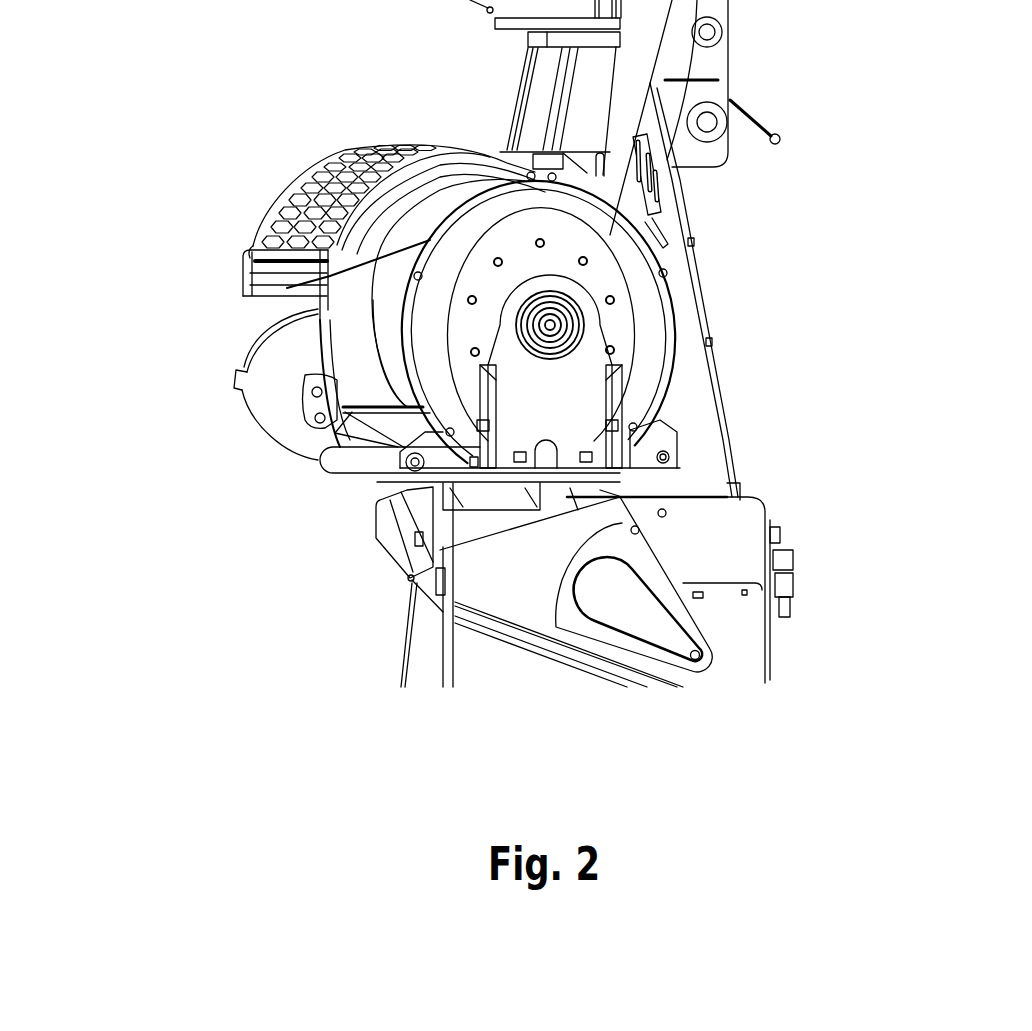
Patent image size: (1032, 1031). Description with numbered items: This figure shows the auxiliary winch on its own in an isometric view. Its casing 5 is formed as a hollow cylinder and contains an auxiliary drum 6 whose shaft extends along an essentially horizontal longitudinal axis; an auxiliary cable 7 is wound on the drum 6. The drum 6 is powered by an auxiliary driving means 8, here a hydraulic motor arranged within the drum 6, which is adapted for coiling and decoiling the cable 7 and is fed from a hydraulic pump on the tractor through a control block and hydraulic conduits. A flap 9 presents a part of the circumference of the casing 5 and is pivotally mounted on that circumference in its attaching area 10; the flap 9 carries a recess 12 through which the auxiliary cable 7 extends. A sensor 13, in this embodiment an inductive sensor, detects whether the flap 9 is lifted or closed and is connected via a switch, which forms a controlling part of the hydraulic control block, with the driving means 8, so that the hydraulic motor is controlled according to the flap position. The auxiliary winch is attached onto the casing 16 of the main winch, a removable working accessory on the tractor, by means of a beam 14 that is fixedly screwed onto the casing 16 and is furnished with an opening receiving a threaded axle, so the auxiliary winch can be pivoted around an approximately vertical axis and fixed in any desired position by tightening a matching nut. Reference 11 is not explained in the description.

The casing 5 is at (320, 316).
The auxiliary drum 6 is at (393, 358).
The auxiliary cable 7 is at (253, 242).
The auxiliary driving means 8 is at (553, 325).
The flap 9 is at (307, 178).
The attaching area 10 is at (537, 160).
The cover end plate 11 is at (240, 253).
The recess 12 is at (263, 282).
The sensor 13 is at (560, 162).
The beam 14 is at (455, 521).
The casing of the main winch 16 is at (727, 613).